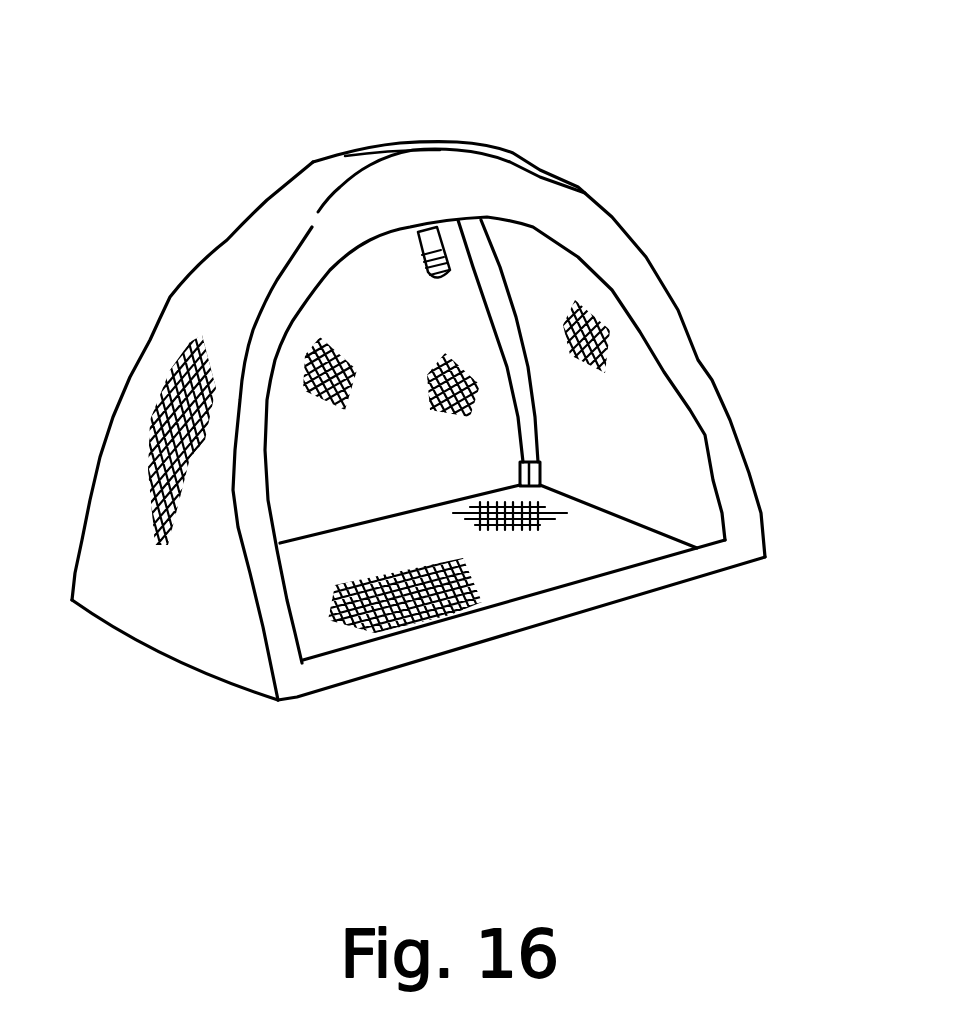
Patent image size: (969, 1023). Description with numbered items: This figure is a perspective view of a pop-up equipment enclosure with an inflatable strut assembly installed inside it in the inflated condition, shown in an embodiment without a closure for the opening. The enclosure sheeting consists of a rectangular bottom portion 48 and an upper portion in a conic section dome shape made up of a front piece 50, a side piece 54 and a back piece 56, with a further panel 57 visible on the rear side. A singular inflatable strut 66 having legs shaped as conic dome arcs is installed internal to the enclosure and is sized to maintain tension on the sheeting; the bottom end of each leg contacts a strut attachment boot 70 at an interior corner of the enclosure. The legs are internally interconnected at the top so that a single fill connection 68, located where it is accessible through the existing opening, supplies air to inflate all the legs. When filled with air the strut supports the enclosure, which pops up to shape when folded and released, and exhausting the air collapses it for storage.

The bottom portion 48 is at (517, 565).
The front piece 50 is at (287, 660).
The side piece 54 is at (180, 598).
The back piece 56 is at (340, 312).
The rear panel 57 is at (647, 388).
The inflatable strut 66 is at (510, 313).
The fill connection 68 is at (436, 228).
The connector 70 is at (540, 469).